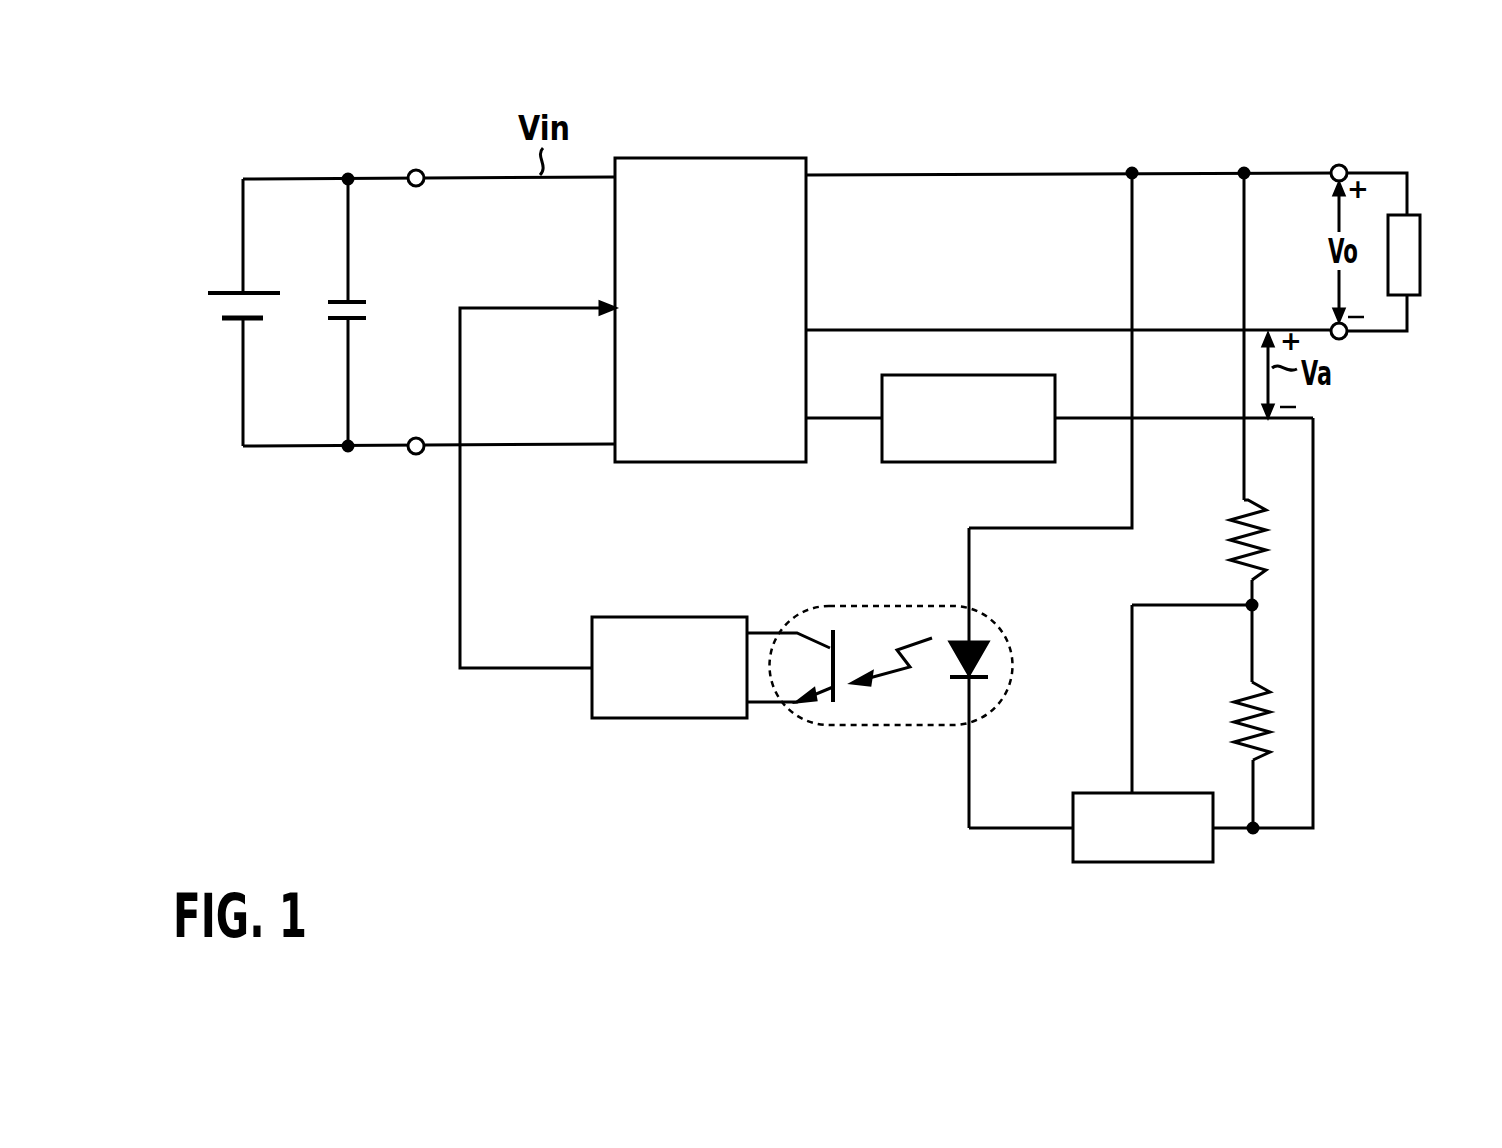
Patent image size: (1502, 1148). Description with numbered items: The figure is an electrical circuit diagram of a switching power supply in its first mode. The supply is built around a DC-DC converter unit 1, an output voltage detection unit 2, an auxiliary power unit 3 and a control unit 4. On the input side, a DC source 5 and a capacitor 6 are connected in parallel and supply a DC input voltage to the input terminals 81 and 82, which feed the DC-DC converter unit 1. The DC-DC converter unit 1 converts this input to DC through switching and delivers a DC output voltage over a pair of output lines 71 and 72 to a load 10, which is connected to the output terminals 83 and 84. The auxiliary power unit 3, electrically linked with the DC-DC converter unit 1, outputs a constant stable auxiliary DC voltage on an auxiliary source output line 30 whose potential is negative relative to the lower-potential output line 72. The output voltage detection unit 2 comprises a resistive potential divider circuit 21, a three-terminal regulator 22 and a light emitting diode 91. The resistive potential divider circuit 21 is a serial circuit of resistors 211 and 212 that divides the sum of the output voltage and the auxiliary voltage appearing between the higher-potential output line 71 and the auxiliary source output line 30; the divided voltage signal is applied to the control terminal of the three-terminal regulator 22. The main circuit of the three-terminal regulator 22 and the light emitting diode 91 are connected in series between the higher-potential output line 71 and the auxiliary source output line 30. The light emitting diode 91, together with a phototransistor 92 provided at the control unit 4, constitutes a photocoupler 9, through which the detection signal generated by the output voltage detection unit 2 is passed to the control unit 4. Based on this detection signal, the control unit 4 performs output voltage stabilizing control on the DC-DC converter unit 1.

The DC-DC converter unit 1 is at (708, 157).
The output voltage detection unit 2 is at (1208, 540).
The auxiliary power unit 3 is at (905, 465).
The control unit 4 is at (680, 720).
The DC source 5 is at (207, 300).
The capacitor 6 is at (363, 307).
The photocoupler 9 is at (906, 678).
The light emitting diode 91 is at (990, 645).
The phototransistor 92 is at (808, 658).
The load 10 is at (1420, 253).
The resistive potential divider circuit 21 is at (1227, 530).
The resistor 211 is at (1226, 556).
The resistor 212 is at (1238, 698).
The 3-terminal regulator 22 is at (1072, 862).
The auxiliary source output line 30 is at (1195, 415).
The higher-potential output line 71 is at (1040, 172).
The lower-potential output line 72 is at (1045, 328).
The input terminal 81 is at (416, 169).
The input terminal 82 is at (416, 455).
The output terminal 83 is at (1339, 165).
The output terminal 84 is at (1345, 337).